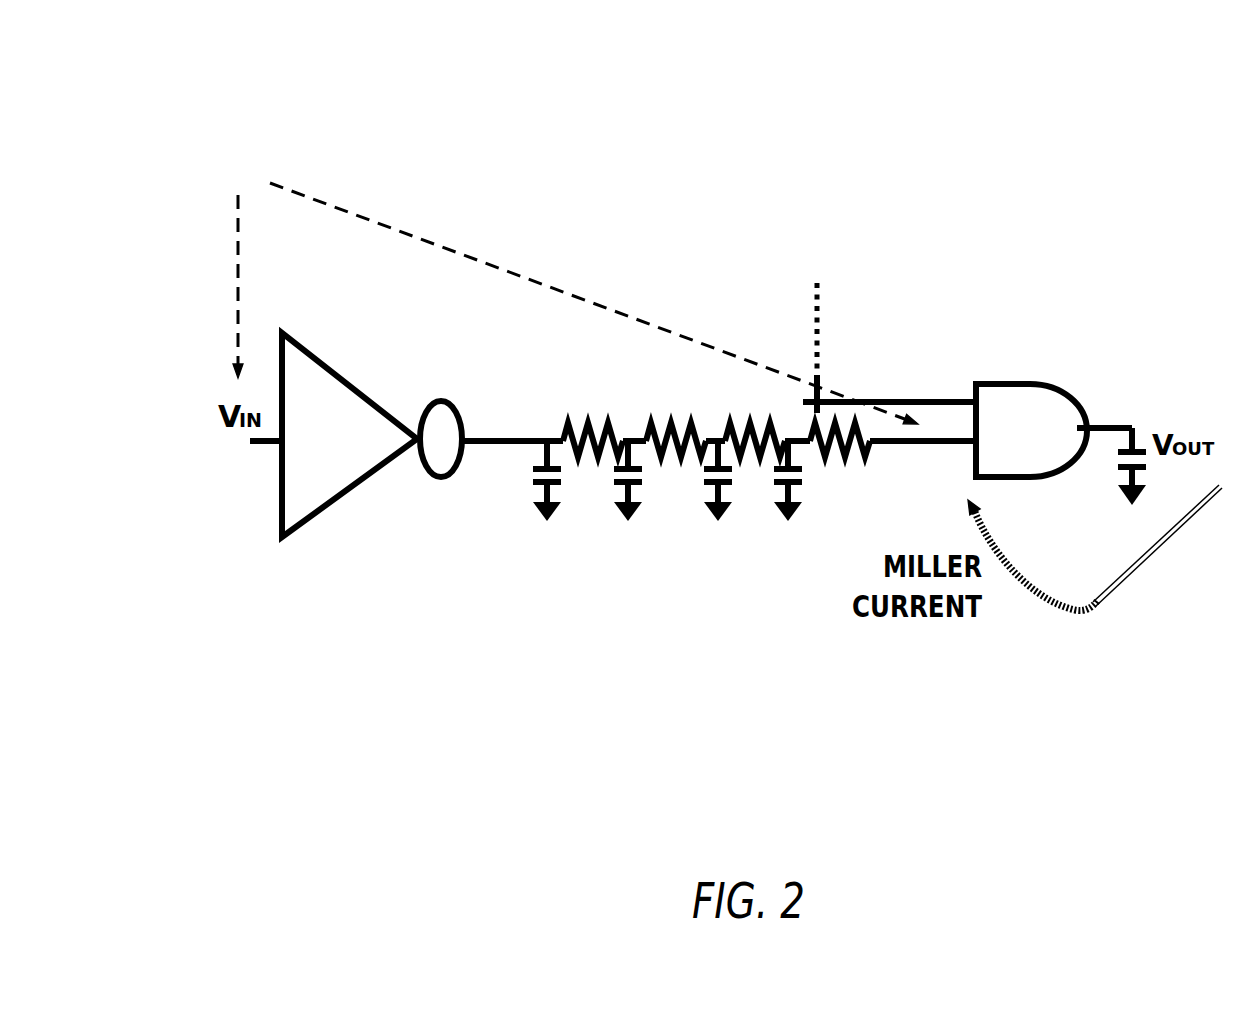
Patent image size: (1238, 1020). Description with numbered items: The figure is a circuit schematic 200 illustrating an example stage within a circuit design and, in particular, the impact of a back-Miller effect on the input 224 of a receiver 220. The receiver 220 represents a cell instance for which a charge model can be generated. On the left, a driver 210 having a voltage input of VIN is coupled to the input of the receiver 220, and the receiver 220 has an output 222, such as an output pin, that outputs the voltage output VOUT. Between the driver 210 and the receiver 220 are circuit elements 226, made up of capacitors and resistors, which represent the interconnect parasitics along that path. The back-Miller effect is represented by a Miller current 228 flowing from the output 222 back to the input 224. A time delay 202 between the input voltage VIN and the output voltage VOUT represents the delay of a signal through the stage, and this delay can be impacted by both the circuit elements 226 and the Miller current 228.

The circuit schematic 200 is at (148, 72).
The time delay 202 is at (570, 290).
The driver 210 is at (342, 372).
The receiver 220 is at (1033, 385).
The output 222 is at (1137, 408).
The input 224 is at (948, 458).
The circuit elements 226 is at (878, 508).
The Miller current 228 is at (1092, 607).